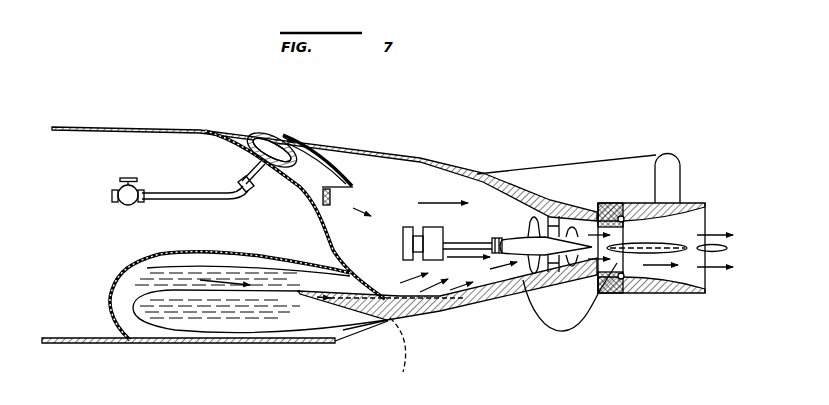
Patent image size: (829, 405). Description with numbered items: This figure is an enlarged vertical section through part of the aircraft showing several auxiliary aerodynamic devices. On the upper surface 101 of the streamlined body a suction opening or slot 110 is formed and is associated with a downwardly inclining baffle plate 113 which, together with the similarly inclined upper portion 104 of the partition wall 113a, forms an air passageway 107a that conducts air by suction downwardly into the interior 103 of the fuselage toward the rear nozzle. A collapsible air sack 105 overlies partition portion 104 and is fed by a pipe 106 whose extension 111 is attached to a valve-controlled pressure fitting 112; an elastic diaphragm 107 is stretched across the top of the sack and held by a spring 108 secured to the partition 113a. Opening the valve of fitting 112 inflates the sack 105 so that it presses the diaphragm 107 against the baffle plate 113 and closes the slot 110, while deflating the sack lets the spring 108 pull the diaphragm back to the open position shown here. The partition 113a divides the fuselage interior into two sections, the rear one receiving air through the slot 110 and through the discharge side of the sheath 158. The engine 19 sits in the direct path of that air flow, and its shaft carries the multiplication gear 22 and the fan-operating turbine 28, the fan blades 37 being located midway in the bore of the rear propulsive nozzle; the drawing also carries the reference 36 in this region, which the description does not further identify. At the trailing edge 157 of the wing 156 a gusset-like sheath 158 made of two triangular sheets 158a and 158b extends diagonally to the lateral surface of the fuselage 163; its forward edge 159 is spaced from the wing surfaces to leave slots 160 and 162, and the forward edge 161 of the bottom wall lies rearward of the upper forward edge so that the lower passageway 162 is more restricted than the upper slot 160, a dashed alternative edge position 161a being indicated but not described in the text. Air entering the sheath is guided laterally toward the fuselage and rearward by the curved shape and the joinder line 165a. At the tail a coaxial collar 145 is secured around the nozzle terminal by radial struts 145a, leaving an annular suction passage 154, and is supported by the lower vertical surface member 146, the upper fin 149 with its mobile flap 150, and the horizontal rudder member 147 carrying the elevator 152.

The engine 19 is at (438, 232).
The multiplication gear 22 is at (497, 300).
The fan-operating turbine 28 is at (546, 246).
The fan blades 36 is at (553, 218).
The fan blades 37 is at (522, 273).
The fuselage upper surface 101 is at (177, 129).
The fuselage interior 103 is at (144, 156).
The upper portion of partition wall 104 is at (216, 132).
The collapsible air sack 105 is at (247, 147).
The pipe 106 is at (248, 192).
The elastic diaphragm 107 is at (348, 168).
The air passageway 107a is at (353, 188).
The spring 108 is at (335, 203).
The suction slot 110 is at (253, 122).
The pipe extension 111 is at (175, 200).
The pressure fitting 112 is at (128, 206).
The baffle plate 113 is at (342, 162).
The partition wall 113a is at (328, 239).
The coaxial collar 145 is at (655, 294).
The radial struts 145a is at (623, 204).
The lower vertical surface member 146 is at (567, 331).
The horizontal rudder member 147 is at (477, 306).
The upper fin 149 is at (637, 163).
The mobile flap 150 is at (681, 173).
The elevator 152 is at (627, 280).
The annular suction passage 154 is at (557, 201).
The wing 156 is at (133, 308).
The trailing edge 157 is at (368, 322).
The sheath 158 is at (380, 291).
The upper sheet 158a is at (436, 273).
The bottom sheet 158b is at (368, 323).
The forward edge of sheath 159 is at (307, 292).
The upper slot 160 is at (298, 292).
The forward edge of bottom wall 161 is at (343, 329).
The flap deflected position 161a is at (397, 343).
The lower passageway 162 is at (340, 328).
The fuselage 163 is at (192, 347).
The joinder line 165a is at (455, 313).